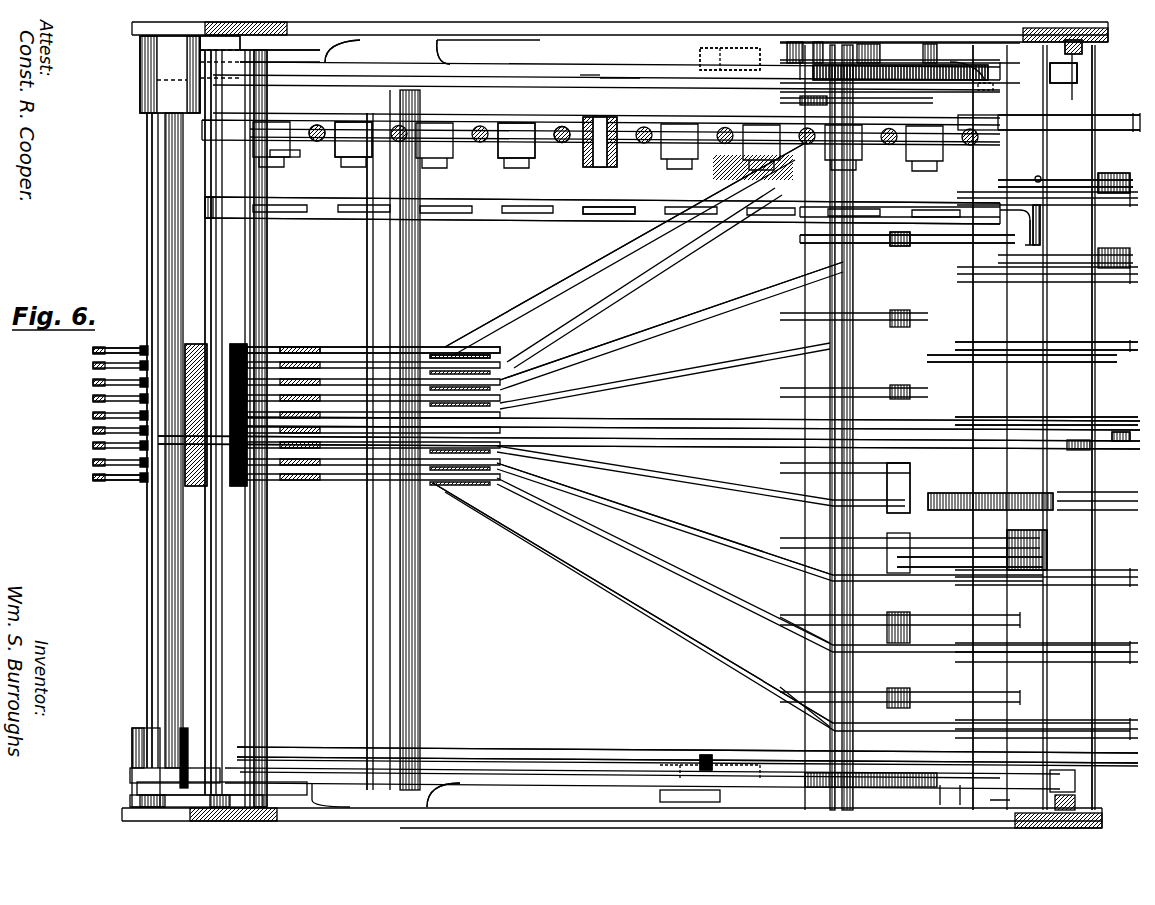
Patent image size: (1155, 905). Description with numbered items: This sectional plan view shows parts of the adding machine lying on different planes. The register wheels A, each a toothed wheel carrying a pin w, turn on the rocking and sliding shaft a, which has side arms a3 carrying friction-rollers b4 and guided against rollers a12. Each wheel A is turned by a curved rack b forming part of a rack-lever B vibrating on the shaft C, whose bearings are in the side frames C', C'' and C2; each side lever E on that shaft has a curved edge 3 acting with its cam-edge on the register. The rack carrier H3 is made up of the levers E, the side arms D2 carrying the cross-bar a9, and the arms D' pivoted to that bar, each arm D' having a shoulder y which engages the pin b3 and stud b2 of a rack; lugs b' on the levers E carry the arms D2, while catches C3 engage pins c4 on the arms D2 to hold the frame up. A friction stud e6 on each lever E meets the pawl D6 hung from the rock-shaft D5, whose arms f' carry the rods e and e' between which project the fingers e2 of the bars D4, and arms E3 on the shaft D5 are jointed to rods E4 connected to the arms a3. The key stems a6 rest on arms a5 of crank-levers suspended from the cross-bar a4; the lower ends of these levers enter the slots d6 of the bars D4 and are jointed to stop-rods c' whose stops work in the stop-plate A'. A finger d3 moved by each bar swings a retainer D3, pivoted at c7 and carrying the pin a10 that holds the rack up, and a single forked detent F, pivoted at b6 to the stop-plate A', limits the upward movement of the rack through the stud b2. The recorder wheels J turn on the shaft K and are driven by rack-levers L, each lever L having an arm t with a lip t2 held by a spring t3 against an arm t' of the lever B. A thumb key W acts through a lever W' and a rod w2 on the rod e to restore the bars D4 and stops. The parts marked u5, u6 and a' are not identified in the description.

The arm f' is at (209, 423).
The friction stud e6 is at (280, 419).
The pawl D6 is at (341, 422).
The side lever E is at (492, 790).
The frame rail C'' is at (498, 48).
The pin b3 is at (589, 75).
The side arm D2 is at (614, 78).
The pin c4 is at (716, 428).
The friction-roller b4 is at (925, 66).
The side arm a3 is at (963, 423).
The side frame C' is at (1095, 49).
The curved edge 3 is at (1087, 73).
The arm E3 is at (197, 80).
The arm a5 is at (300, 128).
The key stem a6 is at (330, 128).
The shaft C is at (758, 440).
The block u5 is at (545, 130).
The roller u6 is at (565, 128).
The cross-bar a4 is at (630, 118).
The rod E4 is at (673, 88).
The catch C3 is at (752, 62).
The register-carrier shaft a is at (997, 427).
The friction-roller a12 is at (1075, 78).
The frame plate a' is at (1089, 427).
The stop-plate A' is at (1069, 406).
The finger e2 is at (208, 150).
The bar D4 is at (602, 196).
The slot d6 is at (595, 208).
The finger d3 is at (1035, 177).
The retainer D3 is at (1070, 182).
The pivot c7 is at (1112, 174).
The pin a10 is at (1020, 232).
The shoulder y is at (1033, 240).
The arm D' is at (907, 427).
The stud b2 is at (922, 242).
The cross-bar a9 is at (1025, 294).
The curved rack b is at (1024, 500).
The rack-lever B is at (585, 264).
The rod e is at (146, 440).
The rod e' is at (200, 422).
The arm t' is at (238, 413).
The arm t is at (372, 338).
The lip t2 is at (268, 345).
The spring t3 is at (272, 352).
The rack-lever L is at (108, 414).
The rod w2 is at (170, 443).
The recorder wheel J is at (197, 490).
The rock-shaft D5 is at (145, 558).
The shaft K is at (262, 622).
The rack carrier H3 is at (487, 773).
The lug b' is at (696, 746).
The side frame C2 is at (494, 794).
The stop-rod c' is at (1022, 366).
The operating-key W is at (1046, 415).
The lever W' is at (1113, 448).
The register wheel A is at (990, 490).
The pin w is at (693, 476).
The pivot b6 is at (1042, 542).
The detent F is at (1050, 560).